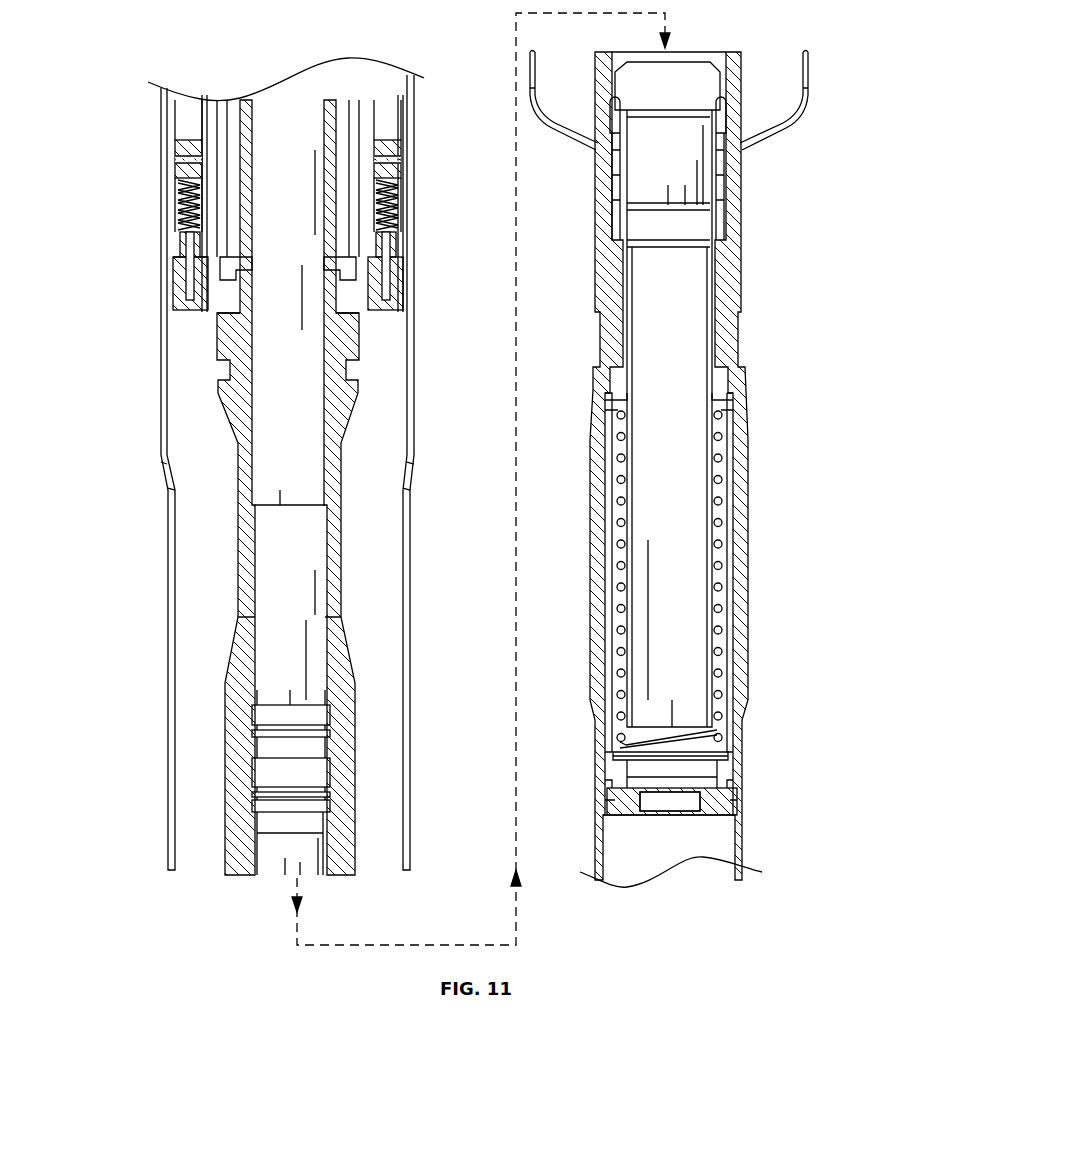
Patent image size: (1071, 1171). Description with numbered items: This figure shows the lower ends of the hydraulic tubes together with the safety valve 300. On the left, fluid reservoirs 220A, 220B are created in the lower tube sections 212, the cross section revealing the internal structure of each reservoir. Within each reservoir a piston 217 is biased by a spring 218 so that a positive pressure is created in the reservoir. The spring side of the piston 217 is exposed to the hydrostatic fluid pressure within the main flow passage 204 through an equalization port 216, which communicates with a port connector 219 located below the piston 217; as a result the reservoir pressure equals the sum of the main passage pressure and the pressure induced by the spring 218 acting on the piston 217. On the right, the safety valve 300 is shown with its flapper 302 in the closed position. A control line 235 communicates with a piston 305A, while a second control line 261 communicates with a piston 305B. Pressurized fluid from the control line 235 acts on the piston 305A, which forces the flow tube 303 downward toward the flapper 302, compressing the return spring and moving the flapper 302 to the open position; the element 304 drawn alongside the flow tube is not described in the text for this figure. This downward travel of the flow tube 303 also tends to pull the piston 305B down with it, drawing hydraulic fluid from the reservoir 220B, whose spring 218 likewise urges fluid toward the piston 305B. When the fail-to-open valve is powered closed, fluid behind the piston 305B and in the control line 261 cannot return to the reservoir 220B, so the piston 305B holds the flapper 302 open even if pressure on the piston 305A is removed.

The main flow passage 204 is at (298, 133).
The lower tube section 212 is at (180, 102).
The equalization port 216 is at (328, 294).
The piston 217 is at (177, 150).
The spring 218 is at (177, 212).
The port connector 219 is at (205, 312).
The fluid reservoir 220A is at (185, 124).
The fluid reservoir 220B is at (388, 118).
The control line 235 is at (172, 513).
The control line 261 is at (407, 513).
The safety valve 300 is at (856, 424).
The flapper 302 is at (697, 809).
The flow tube 303 is at (715, 507).
The sleeve 304 is at (720, 444).
The piston 305A is at (614, 278).
The piston 305B is at (718, 260).